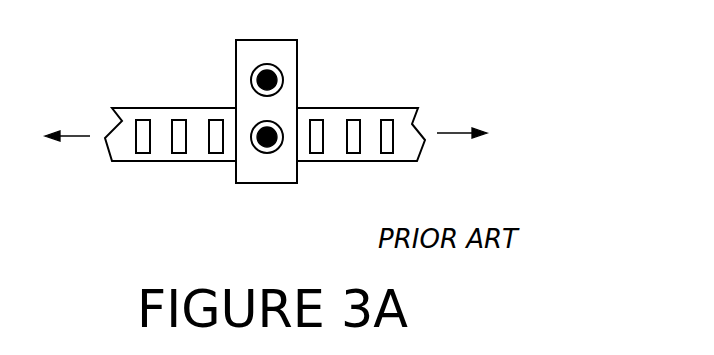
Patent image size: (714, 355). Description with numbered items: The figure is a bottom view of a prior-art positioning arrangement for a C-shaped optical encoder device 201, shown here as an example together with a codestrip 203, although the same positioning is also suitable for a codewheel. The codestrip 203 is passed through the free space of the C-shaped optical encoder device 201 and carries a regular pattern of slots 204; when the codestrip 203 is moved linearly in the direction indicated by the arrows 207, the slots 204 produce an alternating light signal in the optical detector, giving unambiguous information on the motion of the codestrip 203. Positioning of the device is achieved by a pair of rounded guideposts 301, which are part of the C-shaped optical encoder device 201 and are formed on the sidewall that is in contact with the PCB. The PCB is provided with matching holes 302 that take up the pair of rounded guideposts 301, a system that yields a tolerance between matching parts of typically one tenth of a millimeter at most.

The C-shaped optical encoder device 201 is at (236, 50).
The codestrip 203 is at (410, 161).
The slots 204 is at (352, 119).
The arrows 207 is at (68, 135).
The pair of rounded guideposts 301 is at (257, 93).
The matching holes 302 is at (282, 123).